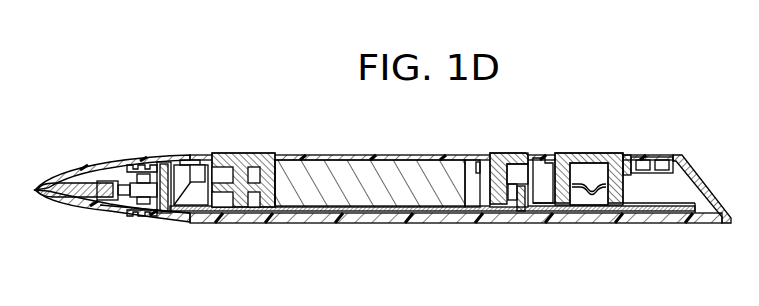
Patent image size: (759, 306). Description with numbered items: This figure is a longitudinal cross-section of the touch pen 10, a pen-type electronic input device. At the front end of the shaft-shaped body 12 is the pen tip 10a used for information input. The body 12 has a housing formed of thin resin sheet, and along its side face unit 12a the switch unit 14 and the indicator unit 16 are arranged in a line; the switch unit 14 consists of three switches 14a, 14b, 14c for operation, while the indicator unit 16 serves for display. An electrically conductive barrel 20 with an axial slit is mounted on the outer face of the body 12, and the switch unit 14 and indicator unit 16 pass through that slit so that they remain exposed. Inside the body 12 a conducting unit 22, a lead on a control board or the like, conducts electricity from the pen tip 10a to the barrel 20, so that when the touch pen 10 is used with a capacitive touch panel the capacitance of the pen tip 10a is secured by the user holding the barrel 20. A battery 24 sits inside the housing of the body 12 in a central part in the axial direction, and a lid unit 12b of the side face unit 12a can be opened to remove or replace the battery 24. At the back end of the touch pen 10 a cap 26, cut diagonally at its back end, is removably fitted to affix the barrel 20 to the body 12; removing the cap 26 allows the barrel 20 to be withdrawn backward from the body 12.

The touch pen 10 is at (371, 185).
The pen tip 10a is at (52, 183).
The body 12 is at (146, 162).
The side face unit 12a is at (410, 137).
The lid unit 12b is at (378, 206).
The switch unit 14 is at (450, 146).
The switch 14a is at (235, 152).
The switch 14b is at (504, 153).
The switch 14c is at (587, 152).
The indicator unit 16 is at (190, 160).
The barrel 20 is at (295, 228).
The conducting unit 22 is at (190, 225).
The battery 24 is at (303, 178).
The cap 26 is at (684, 157).